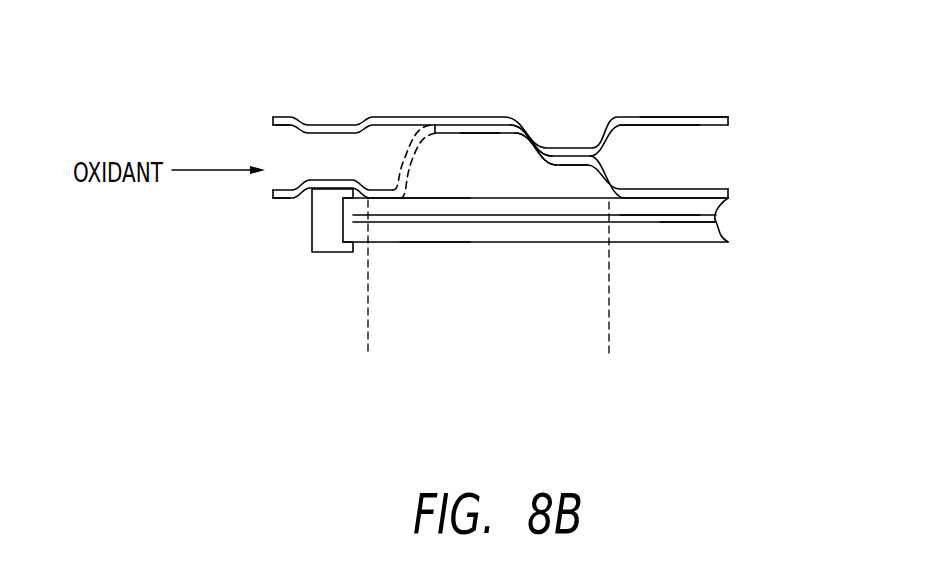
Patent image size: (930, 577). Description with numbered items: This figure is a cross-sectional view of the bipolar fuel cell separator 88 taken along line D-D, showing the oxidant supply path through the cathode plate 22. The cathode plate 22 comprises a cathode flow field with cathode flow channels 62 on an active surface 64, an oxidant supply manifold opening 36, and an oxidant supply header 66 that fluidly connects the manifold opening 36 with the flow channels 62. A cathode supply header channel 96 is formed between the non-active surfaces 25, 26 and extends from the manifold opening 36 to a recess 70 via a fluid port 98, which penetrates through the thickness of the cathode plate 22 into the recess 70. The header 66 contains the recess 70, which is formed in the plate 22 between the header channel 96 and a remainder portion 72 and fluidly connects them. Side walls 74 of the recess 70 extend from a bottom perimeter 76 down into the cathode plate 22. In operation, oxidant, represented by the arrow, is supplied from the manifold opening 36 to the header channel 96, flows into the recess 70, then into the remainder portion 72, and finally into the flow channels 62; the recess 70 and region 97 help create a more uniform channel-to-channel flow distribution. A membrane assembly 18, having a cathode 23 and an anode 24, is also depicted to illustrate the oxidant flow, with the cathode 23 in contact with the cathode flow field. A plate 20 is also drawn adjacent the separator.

The membrane assembly 18 is at (779, 200).
The first plate 20 is at (282, 117).
The cathode plate 22 is at (282, 195).
The cathode 23 is at (433, 208).
The anode 24 is at (457, 230).
The non-active surface 25 is at (300, 137).
The non-active surface 26 is at (337, 180).
The oxidant supply manifold opening 36 is at (307, 258).
The cathode flow channels 62 is at (690, 240).
The active surface 64 is at (638, 240).
The oxidant supply header 66 is at (609, 357).
The recess 70 is at (483, 170).
The remainder portion 72 is at (567, 188).
The side walls 74 is at (519, 140).
The bottom perimeter 76 is at (530, 158).
The bipolar fuel cell separator 88 is at (779, 117).
The cathode supply header channel 96 is at (333, 150).
The region 97 is at (378, 124).
The fluid port 98 is at (408, 126).